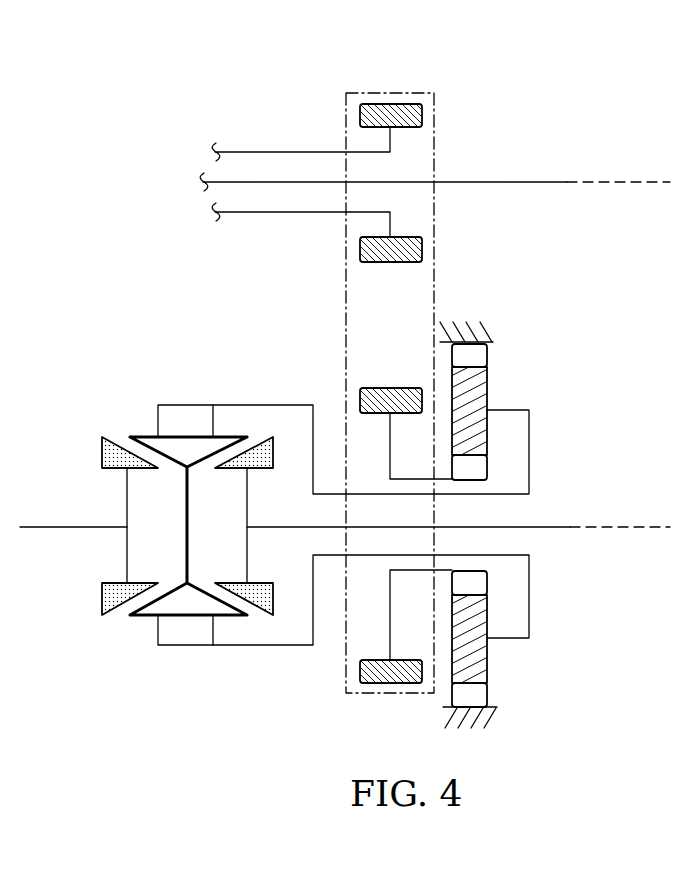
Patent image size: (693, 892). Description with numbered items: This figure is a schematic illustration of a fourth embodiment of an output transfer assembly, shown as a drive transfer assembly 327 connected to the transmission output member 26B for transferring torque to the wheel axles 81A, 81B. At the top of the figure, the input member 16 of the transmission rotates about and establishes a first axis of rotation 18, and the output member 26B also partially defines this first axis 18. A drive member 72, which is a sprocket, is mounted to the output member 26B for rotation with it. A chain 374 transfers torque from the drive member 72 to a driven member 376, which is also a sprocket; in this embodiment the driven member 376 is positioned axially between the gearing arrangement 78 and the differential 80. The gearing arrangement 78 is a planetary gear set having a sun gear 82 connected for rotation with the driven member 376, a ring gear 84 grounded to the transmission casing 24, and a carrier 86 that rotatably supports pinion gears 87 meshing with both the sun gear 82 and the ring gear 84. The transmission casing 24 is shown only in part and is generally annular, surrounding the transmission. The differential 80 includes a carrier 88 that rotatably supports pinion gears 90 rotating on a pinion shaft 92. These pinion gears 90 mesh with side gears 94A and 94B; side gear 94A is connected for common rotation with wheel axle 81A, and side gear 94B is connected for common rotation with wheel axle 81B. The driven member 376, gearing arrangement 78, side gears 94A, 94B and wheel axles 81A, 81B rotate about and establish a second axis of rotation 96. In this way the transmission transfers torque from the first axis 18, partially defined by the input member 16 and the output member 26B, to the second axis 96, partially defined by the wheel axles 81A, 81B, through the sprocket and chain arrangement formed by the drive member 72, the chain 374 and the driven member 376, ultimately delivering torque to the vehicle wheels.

The input member 16 is at (503, 182).
The axis of rotation 18 is at (612, 182).
The transmission casing 24 is at (487, 332).
The transmission output member 26B is at (287, 150).
The drive member 72 is at (407, 104).
The gearing arrangement 78 is at (532, 667).
The differential 80 is at (118, 390).
The wheel axle 81A is at (75, 525).
The wheel axle 81B is at (542, 527).
The sun gear 82 is at (487, 583).
The ring gear 84 is at (487, 693).
The carrier 86 is at (503, 640).
The pinion gears 87 is at (487, 629).
The carrier 88 is at (187, 405).
The pinion gears 90 is at (147, 617).
The pinion shaft 92 is at (185, 545).
The side gear 94A is at (117, 583).
The side gear 94B is at (253, 583).
The second axis of rotation 96 is at (622, 527).
The drive transfer assembly 327 is at (200, 262).
The chain 374 is at (345, 323).
The driven member 376 is at (375, 388).